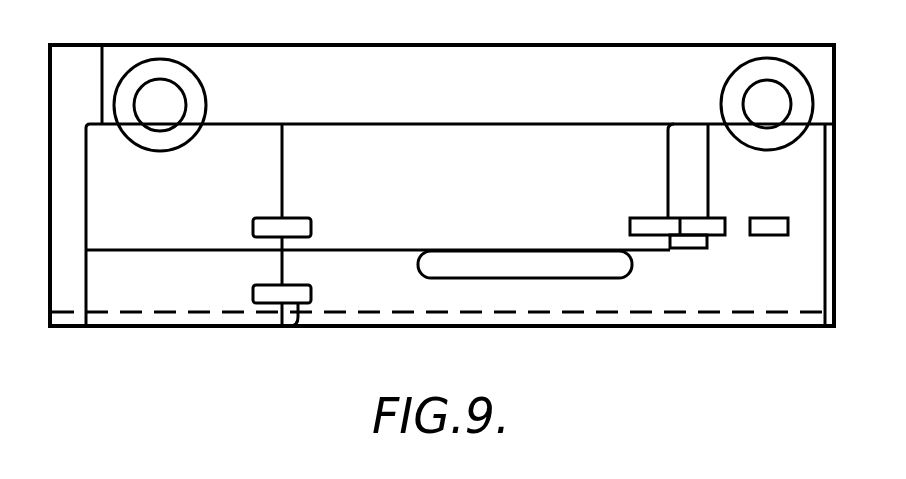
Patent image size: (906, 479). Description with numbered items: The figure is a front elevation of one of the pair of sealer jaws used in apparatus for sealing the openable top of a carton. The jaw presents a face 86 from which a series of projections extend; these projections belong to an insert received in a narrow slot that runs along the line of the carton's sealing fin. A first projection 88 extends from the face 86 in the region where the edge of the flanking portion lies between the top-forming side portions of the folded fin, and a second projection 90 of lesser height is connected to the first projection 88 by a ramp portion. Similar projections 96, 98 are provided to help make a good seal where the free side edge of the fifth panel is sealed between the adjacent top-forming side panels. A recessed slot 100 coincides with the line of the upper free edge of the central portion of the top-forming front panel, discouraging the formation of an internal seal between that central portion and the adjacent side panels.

The face of the jaw 86 is at (500, 200).
The first projection 88 is at (643, 226).
The second projection 90 is at (715, 230).
The projection 96 is at (289, 228).
The projection 98 is at (302, 293).
The recessed slot 100 is at (562, 278).